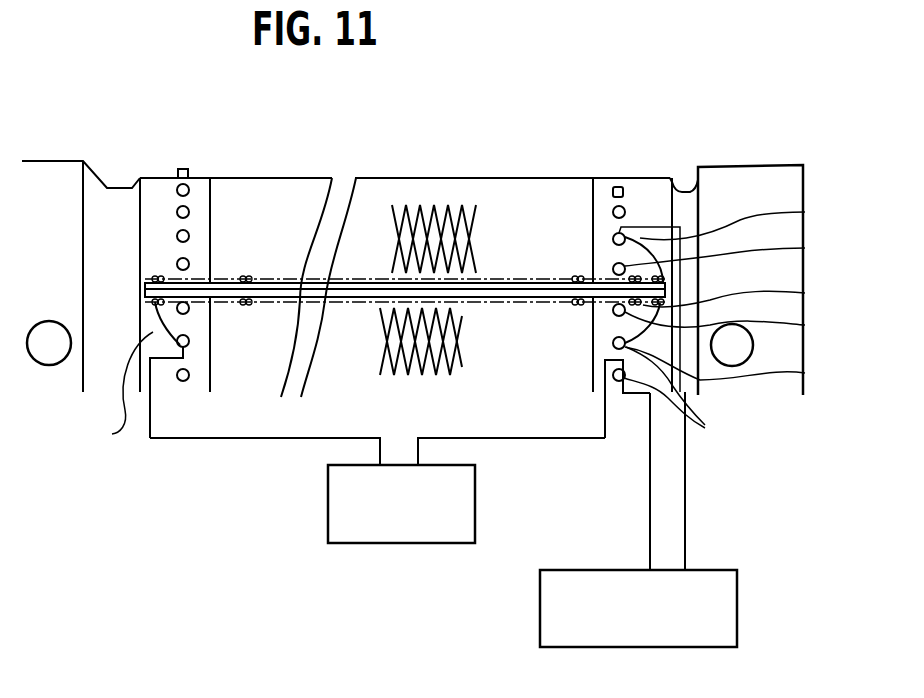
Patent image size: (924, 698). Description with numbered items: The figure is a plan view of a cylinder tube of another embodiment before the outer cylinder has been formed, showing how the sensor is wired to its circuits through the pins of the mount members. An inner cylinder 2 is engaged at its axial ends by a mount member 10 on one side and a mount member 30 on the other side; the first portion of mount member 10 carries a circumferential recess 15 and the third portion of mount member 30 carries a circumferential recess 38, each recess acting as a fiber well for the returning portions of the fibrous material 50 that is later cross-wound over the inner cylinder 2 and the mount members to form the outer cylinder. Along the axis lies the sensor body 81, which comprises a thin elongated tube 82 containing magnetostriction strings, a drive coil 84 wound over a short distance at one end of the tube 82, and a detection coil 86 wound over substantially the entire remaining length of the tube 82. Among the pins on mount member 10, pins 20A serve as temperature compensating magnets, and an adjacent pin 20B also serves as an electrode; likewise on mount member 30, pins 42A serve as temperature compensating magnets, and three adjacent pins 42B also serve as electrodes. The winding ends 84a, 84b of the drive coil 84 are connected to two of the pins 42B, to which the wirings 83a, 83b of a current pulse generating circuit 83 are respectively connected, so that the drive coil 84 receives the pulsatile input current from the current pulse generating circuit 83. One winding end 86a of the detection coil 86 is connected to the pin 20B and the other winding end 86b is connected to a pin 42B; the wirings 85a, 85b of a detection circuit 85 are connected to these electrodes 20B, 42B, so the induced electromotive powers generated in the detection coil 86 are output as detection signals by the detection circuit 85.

The inner cylinder 2 is at (540, 195).
The mount member 10 is at (162, 195).
The circumferential recess 15 is at (125, 178).
The pins 20A is at (189, 262).
The pin 20B is at (188, 345).
The mount member 30 is at (650, 200).
The circumferential recess 38 is at (690, 168).
The pins 42A is at (548, 398).
The pins 42B is at (613, 240).
The fibrous material 50 is at (393, 212).
The sensor body 81 is at (493, 266).
The tube 82 is at (365, 290).
The current pulse generating circuit 83 is at (738, 607).
The wiring 83a is at (650, 520).
The wiring 83b is at (685, 518).
The drive coil 84 is at (743, 296).
The winding end 84a is at (740, 295).
The winding end 84b is at (743, 367).
The detection circuit 85 is at (400, 545).
The wiring 85a is at (245, 440).
The wiring 85b is at (565, 440).
The detection coil 86 is at (498, 305).
The winding end 86a is at (101, 391).
The winding end 86b is at (743, 328).